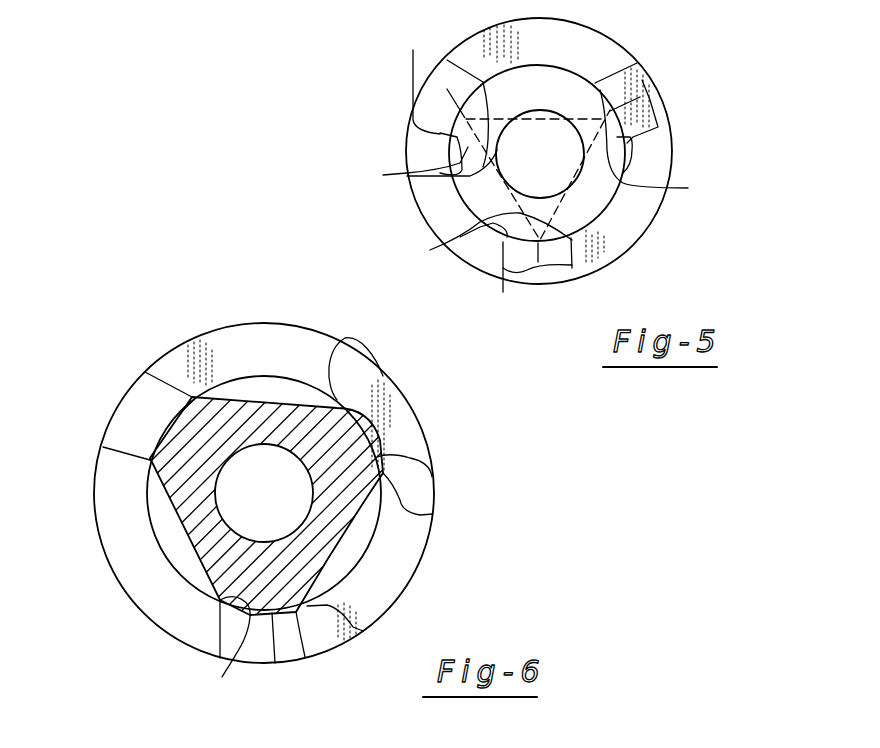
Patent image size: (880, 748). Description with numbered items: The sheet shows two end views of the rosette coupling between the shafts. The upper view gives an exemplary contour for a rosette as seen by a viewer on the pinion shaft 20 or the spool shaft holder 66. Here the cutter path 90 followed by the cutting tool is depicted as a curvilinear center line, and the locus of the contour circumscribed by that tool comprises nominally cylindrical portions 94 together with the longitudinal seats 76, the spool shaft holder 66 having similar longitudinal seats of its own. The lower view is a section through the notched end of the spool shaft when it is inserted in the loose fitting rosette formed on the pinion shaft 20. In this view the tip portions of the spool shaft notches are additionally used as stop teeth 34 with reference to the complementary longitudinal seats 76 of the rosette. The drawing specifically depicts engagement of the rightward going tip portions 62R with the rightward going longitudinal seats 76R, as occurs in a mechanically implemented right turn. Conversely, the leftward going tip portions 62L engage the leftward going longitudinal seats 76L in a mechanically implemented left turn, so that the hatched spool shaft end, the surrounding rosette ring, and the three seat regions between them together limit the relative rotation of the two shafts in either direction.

In FIG. 5, the pinion shaft 20 is at (643, 233).
In FIG. 5, the spool shaft holder 66 is at (537, 153).
In FIG. 5, the cutter path 90 is at (607, 113).
In FIG. 5, the nominally cylindrical portions 94 is at (453, 58).
In FIG. 5, the longitudinal seats 76 is at (460, 237).
In FIG. 6, the rightward going longitudinal seats 76R is at (193, 397).
In FIG. 6, the leftward going longitudinal seats 76L is at (330, 353).
In FIG. 6, the rightward going tip portions 62R is at (168, 412).
In FIG. 6, the leftward going tip portions 62L is at (103, 447).
In FIG. 6, the stop teeth 34 is at (150, 432).